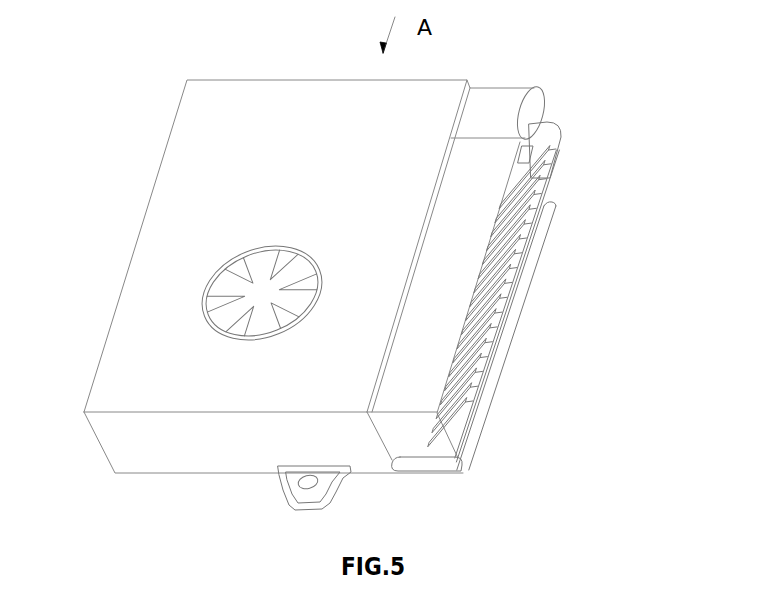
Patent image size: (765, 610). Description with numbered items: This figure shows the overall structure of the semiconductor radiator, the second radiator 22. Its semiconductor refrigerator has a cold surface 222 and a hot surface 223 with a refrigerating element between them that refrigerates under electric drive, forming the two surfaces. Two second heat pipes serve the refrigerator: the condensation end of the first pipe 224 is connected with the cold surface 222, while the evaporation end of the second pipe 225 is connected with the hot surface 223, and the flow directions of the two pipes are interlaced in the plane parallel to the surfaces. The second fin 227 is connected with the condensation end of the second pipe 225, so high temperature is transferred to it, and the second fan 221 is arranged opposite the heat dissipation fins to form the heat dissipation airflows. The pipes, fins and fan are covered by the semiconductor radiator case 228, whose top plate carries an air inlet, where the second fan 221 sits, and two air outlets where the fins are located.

The second radiator 22 is at (145, 80).
The second fan 221 is at (235, 292).
The cold surface 222 is at (543, 113).
The hot surface 223 is at (547, 148).
The first pipe 224 is at (500, 100).
The second pipe 225 is at (547, 185).
The second fin 227 is at (500, 243).
The semiconductor radiator case 228 is at (128, 350).